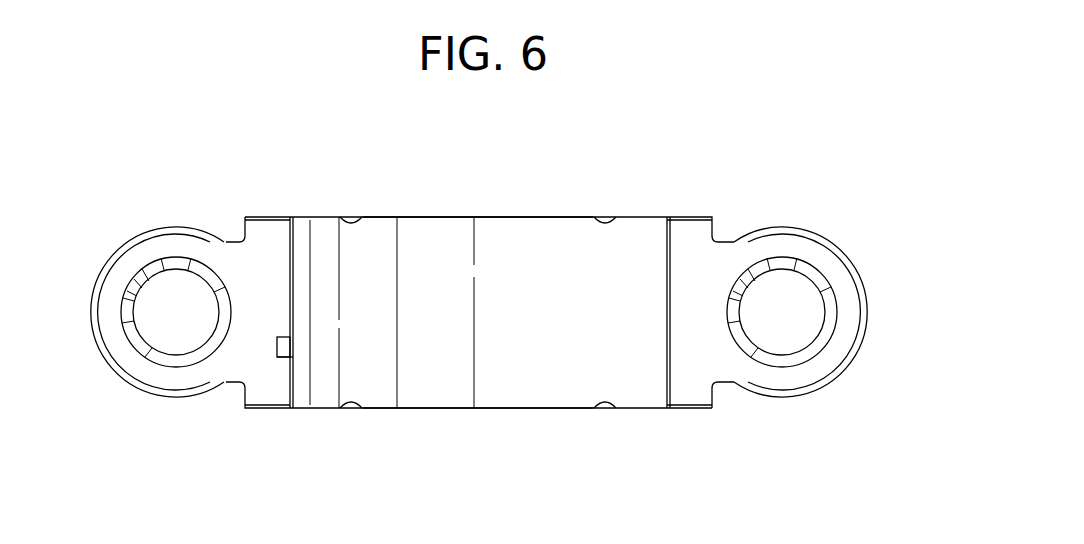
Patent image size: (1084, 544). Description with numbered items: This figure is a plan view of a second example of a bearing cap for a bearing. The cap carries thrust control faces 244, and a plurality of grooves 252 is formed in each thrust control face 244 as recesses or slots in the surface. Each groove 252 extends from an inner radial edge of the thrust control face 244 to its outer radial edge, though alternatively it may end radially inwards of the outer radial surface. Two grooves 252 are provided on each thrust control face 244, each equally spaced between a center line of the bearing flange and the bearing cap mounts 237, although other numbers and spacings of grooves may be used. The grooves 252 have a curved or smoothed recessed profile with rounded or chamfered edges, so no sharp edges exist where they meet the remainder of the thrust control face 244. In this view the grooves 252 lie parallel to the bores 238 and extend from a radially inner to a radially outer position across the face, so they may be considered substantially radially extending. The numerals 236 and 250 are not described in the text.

The damper body 236 is at (565, 312).
The bearing cap mount 237 is at (140, 392).
The bore 238 is at (163, 298).
The thrust control face 244 is at (467, 218).
The port 250 is at (285, 347).
The groove 252 is at (350, 220).